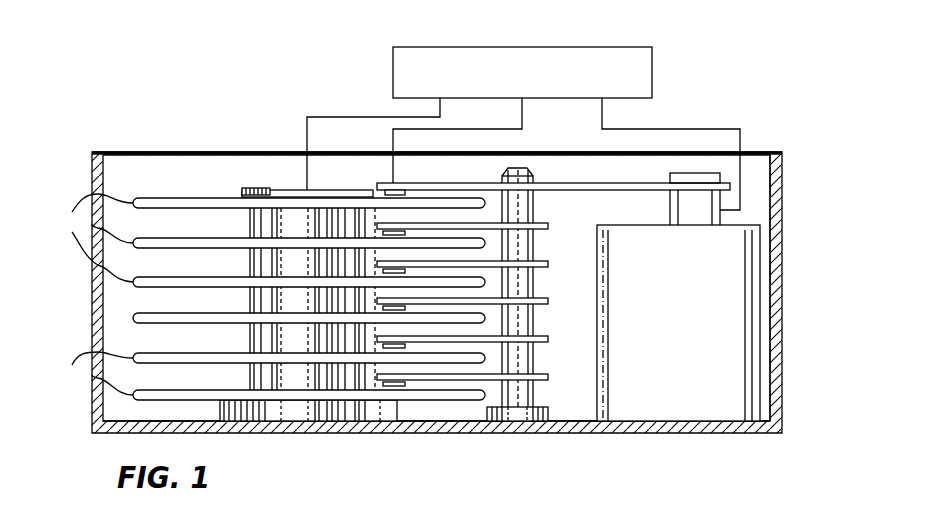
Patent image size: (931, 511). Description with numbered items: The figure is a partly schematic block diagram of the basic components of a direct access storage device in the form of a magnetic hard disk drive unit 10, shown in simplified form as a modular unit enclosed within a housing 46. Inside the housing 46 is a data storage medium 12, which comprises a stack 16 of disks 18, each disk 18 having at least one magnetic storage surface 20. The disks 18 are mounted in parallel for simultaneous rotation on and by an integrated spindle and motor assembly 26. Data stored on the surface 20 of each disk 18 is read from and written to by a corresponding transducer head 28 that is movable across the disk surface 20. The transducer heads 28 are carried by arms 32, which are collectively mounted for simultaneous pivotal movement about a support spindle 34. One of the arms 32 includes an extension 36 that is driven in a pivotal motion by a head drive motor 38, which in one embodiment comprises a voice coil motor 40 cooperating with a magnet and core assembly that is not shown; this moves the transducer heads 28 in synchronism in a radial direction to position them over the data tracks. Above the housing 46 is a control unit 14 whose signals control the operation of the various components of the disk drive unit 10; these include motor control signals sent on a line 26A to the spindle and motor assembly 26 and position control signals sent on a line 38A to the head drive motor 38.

The magnetic hard disk drive unit 10 is at (737, 80).
The data storage medium 12 is at (258, 126).
The control unit 14 is at (653, 62).
The stack 16 is at (207, 170).
The disks 18 is at (92, 222).
The magnetic storage surface 20 is at (150, 198).
The integrated spindle and motor assembly 26 is at (297, 380).
The line 26A is at (352, 117).
The transducer head 28 is at (388, 188).
The arms 32 is at (541, 297).
The support spindle 34 is at (548, 406).
The extension 36 is at (595, 183).
The head drive motor 38 is at (697, 405).
The line 38A is at (670, 128).
The voice coil motor 40 is at (722, 210).
The housing 46 is at (783, 343).